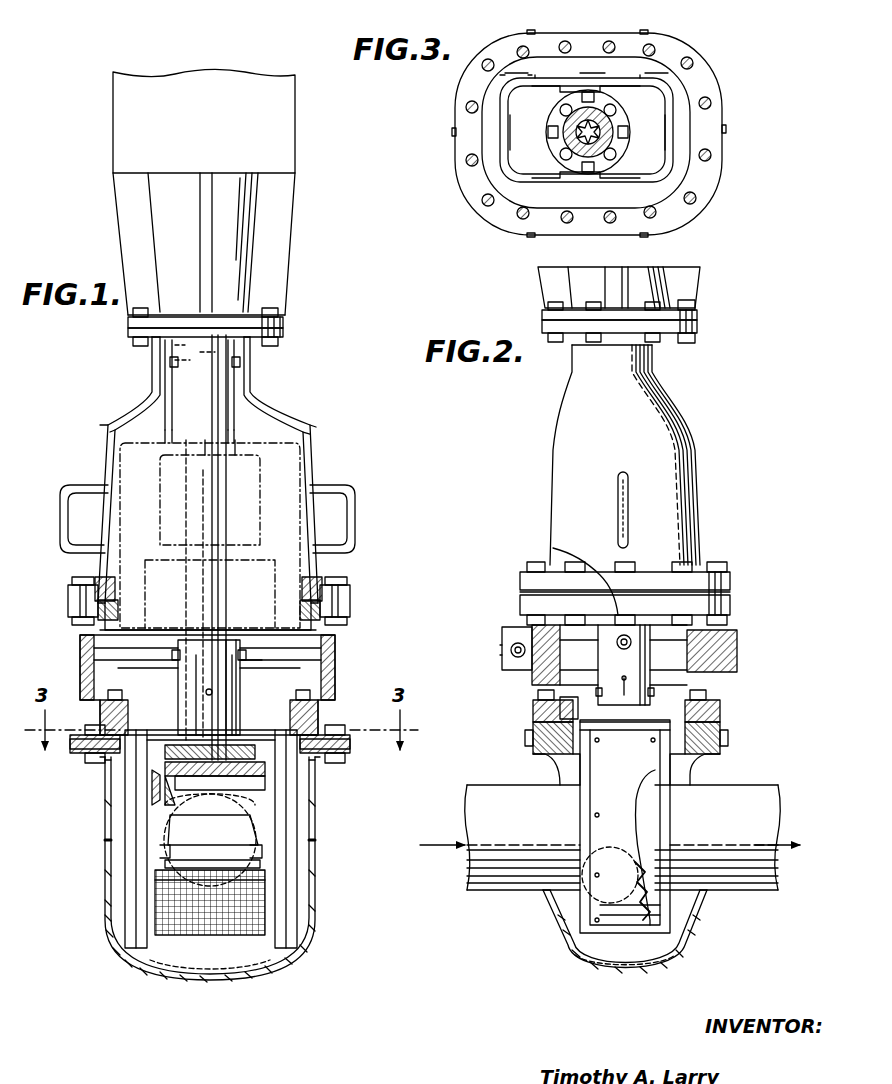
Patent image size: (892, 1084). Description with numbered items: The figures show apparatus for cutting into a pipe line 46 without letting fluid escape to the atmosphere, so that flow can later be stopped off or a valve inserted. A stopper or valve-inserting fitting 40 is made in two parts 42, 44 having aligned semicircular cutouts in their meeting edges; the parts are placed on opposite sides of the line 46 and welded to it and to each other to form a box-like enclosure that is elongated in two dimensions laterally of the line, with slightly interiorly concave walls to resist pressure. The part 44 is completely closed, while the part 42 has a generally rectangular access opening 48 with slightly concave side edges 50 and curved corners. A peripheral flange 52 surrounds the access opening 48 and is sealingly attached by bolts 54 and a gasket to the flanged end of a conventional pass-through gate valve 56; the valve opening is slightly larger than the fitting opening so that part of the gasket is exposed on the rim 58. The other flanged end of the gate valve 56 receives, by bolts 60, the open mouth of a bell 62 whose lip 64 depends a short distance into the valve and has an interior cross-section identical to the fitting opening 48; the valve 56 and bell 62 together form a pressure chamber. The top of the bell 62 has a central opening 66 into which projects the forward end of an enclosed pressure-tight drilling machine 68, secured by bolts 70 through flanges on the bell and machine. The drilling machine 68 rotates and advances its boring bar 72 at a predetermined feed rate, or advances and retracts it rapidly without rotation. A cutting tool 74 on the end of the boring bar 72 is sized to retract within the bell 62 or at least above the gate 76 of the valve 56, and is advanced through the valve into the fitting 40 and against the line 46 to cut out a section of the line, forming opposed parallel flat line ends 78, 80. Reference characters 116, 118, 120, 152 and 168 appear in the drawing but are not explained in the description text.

In FIG. 1, the stopper or valve-inserting fitting 40 is at (322, 812).
In FIG. 2, the stopper or valve-inserting fitting 40 is at (572, 955).
In FIG. 3, the stopper or valve-inserting fitting 40 is at (724, 170).
In FIG. 1, the fitting part 42 is at (104, 821).
In FIG. 2, the fitting part 42 is at (553, 768).
In FIG. 3, the fitting part 42 is at (712, 198).
In FIG. 1, the fitting part 44 is at (112, 900).
In FIG. 2, the fitting part 44 is at (625, 972).
In FIG. 2, the pipe line 46 is at (500, 890).
In FIG. 1, the access opening 48 is at (298, 730).
In FIG. 2, the access opening 48 is at (560, 698).
In FIG. 3, the access opening 48 is at (578, 82).
In FIG. 2, the side edges 50 is at (722, 748).
In FIG. 3, the side edges 50 is at (548, 80).
In FIG. 1, the peripheral flange 52 is at (340, 752).
In FIG. 2, the peripheral flange 52 is at (528, 735).
In FIG. 3, the peripheral flange 52 is at (710, 115).
In FIG. 1, the bolts 54 is at (335, 726).
In FIG. 2, the bolts 54 is at (720, 698).
In FIG. 3, the bolts 54 is at (470, 165).
In FIG. 1, the pass-through gate valve 56 is at (338, 660).
In FIG. 2, the pass-through gate valve 56 is at (725, 628).
In FIG. 1, the rim 58 is at (122, 732).
In FIG. 2, the rim 58 is at (533, 705).
In FIG. 1, the bolts 60 is at (345, 580).
In FIG. 2, the bolts 60 is at (720, 570).
In FIG. 1, the bell 62 is at (308, 435).
In FIG. 2, the bell 62 is at (695, 468).
In FIG. 1, the lip 64 is at (100, 625).
In FIG. 1, the central opening 66 is at (160, 360).
In FIG. 1, the drilling machine 68 is at (300, 243).
In FIG. 2, the drilling machine 68 is at (708, 283).
In FIG. 1, the bolts 70 is at (268, 313).
In FIG. 2, the bolts 70 is at (557, 305).
In FIG. 1, the boring bar 72 is at (225, 478).
In FIG. 2, the boring bar 72 is at (575, 555).
In FIG. 3, the boring bar 72 is at (612, 143).
In FIG. 1, the cutting tool 74 is at (120, 862).
In FIG. 2, the cutting tool 74 is at (605, 900).
In FIG. 3, the cutting tool 74 is at (555, 182).
In FIG. 2, the gate 76 is at (740, 650).
In FIG. 1, the line end 78 is at (245, 822).
In FIG. 2, the line end 80 is at (655, 825).
In FIG. 1, the bearing sleeve 116 is at (260, 687).
In FIG. 2, the bearing sleeve 116 is at (665, 660).
In FIG. 2, the set screw 118 is at (596, 690).
In FIG. 1, the bearing block 120 is at (176, 650).
In FIG. 2, the bearing block 120 is at (624, 665).
In FIG. 1, the screen 152 is at (192, 938).
In FIG. 2, the screen 152 is at (662, 895).
In FIG. 1, the screen support 168 is at (230, 938).
In FIG. 2, the screen support 168 is at (650, 865).